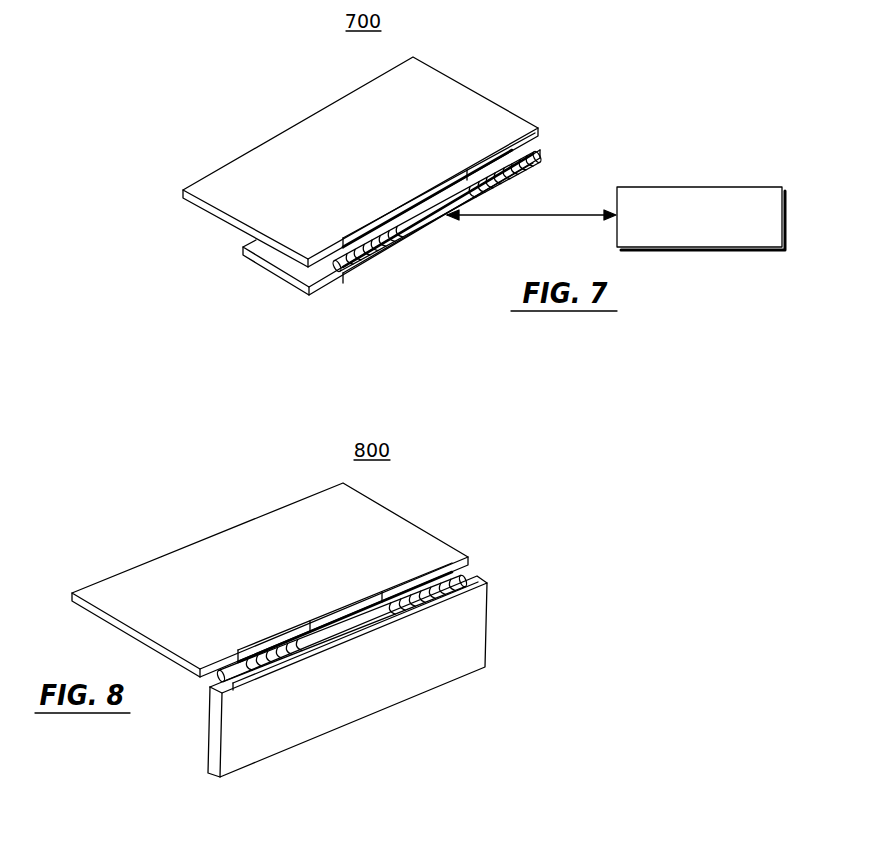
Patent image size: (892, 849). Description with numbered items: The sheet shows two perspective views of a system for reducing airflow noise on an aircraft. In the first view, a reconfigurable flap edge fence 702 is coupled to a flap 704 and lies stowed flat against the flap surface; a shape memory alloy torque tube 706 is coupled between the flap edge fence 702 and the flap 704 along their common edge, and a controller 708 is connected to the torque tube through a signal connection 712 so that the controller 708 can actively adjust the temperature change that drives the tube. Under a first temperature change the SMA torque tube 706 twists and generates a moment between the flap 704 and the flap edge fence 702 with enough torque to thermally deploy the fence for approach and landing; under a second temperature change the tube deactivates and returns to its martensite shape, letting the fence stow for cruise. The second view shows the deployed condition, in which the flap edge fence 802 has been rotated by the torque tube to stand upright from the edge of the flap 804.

In FIG. 7, the reconfigurable flap edge fence 702 is at (293, 288).
In FIG. 7, the flap 704 is at (443, 74).
In FIG. 7, the shape memory alloy (SMA) torque tube 706 is at (508, 157).
In FIG. 7, the controller 708 is at (750, 187).
In FIG. 7, the control signal connection 712 is at (554, 213).
In FIG. 8, the flap edge fence 802 is at (247, 767).
In FIG. 8, the horizontal plate 804 is at (380, 502).